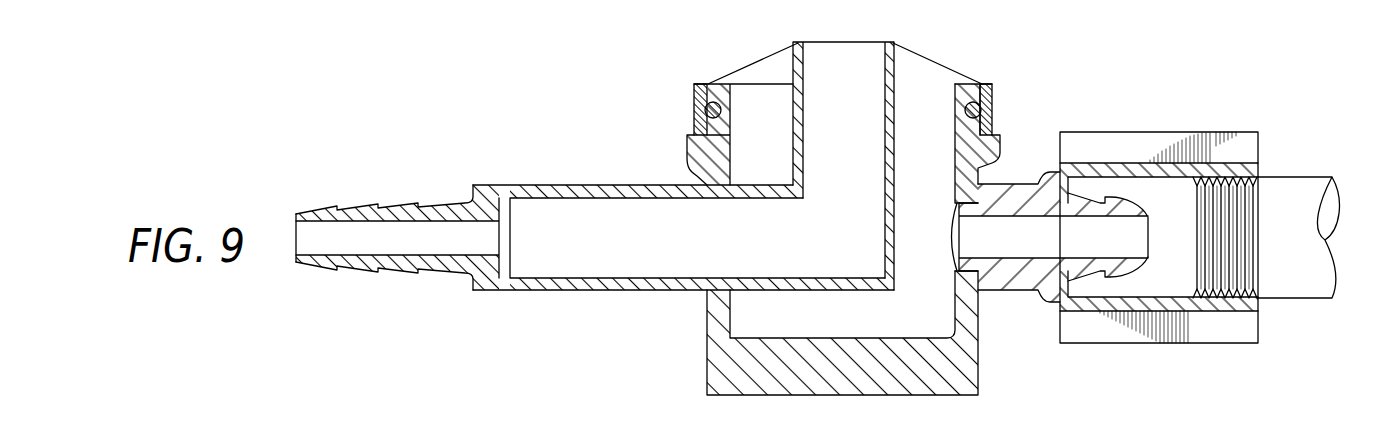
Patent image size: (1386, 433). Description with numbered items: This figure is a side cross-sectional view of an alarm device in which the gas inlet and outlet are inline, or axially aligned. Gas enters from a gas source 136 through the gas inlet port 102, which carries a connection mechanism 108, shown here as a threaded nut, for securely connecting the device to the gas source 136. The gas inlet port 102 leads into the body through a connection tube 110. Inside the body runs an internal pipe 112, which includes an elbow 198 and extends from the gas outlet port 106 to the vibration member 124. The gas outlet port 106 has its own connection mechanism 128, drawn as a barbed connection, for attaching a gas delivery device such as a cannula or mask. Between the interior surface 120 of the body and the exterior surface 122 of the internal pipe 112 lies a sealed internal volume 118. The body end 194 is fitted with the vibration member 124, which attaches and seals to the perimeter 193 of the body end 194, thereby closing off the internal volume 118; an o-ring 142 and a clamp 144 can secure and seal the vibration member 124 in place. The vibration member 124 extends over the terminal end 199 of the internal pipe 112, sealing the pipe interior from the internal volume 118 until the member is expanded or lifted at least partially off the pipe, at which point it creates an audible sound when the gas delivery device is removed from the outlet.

The gas inlet port 102 is at (1240, 268).
The gas outlet port 106 is at (296, 238).
The connection mechanism 108 is at (1218, 343).
The connection tube 110 is at (1012, 190).
The internal pipe 112 is at (805, 283).
The internal volume 118 is at (935, 310).
The interior surface 120 is at (957, 120).
The exterior surface 122 is at (895, 195).
The vibration member 124 is at (752, 62).
The connection mechanism 128 is at (398, 220).
The gas source 136 is at (1295, 177).
The o-ring 142 is at (978, 105).
The clamp 144 is at (992, 125).
The perimeter 193 is at (980, 84).
The body end 194 is at (940, 82).
The elbow 198 is at (883, 302).
The terminal end 199 is at (798, 43).